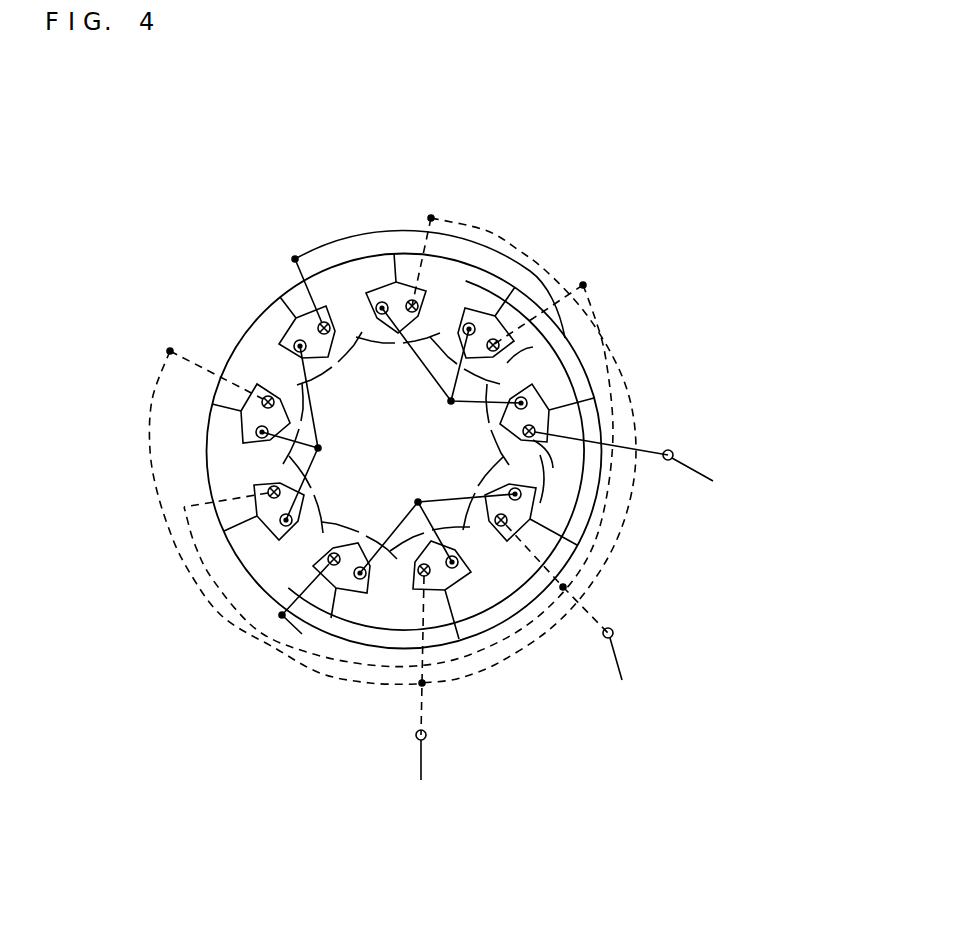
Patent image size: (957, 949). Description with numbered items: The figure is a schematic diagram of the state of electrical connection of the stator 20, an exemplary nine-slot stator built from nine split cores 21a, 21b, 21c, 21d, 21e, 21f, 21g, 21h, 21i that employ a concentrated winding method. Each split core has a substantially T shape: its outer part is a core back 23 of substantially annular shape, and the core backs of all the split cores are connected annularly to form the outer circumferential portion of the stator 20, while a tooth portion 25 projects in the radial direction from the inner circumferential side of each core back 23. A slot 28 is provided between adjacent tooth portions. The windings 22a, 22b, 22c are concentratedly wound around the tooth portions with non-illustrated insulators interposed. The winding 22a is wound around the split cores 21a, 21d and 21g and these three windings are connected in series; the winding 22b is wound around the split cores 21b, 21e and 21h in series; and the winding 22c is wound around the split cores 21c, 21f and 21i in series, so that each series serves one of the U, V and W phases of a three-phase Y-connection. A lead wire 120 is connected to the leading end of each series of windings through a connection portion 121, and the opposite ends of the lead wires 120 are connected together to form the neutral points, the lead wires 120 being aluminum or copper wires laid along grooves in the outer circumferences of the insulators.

The stator 20 is at (608, 240).
The split core 21a is at (495, 293).
The split core 21b is at (555, 388).
The split core 21c is at (572, 425).
The split core 21d is at (565, 557).
The split core 21e is at (440, 612).
The split core 21f is at (322, 600).
The split core 21g is at (230, 530).
The split core 21h is at (262, 326).
The split core 21i is at (290, 295).
The winding 22a is at (470, 328).
The winding 22b is at (548, 352).
The winding 22c is at (540, 503).
The core back 23 is at (218, 438).
The tooth portion 25 is at (478, 432).
The slot 28 is at (447, 383).
The lead wire 120 is at (673, 459).
The connection portion 121 is at (673, 452).